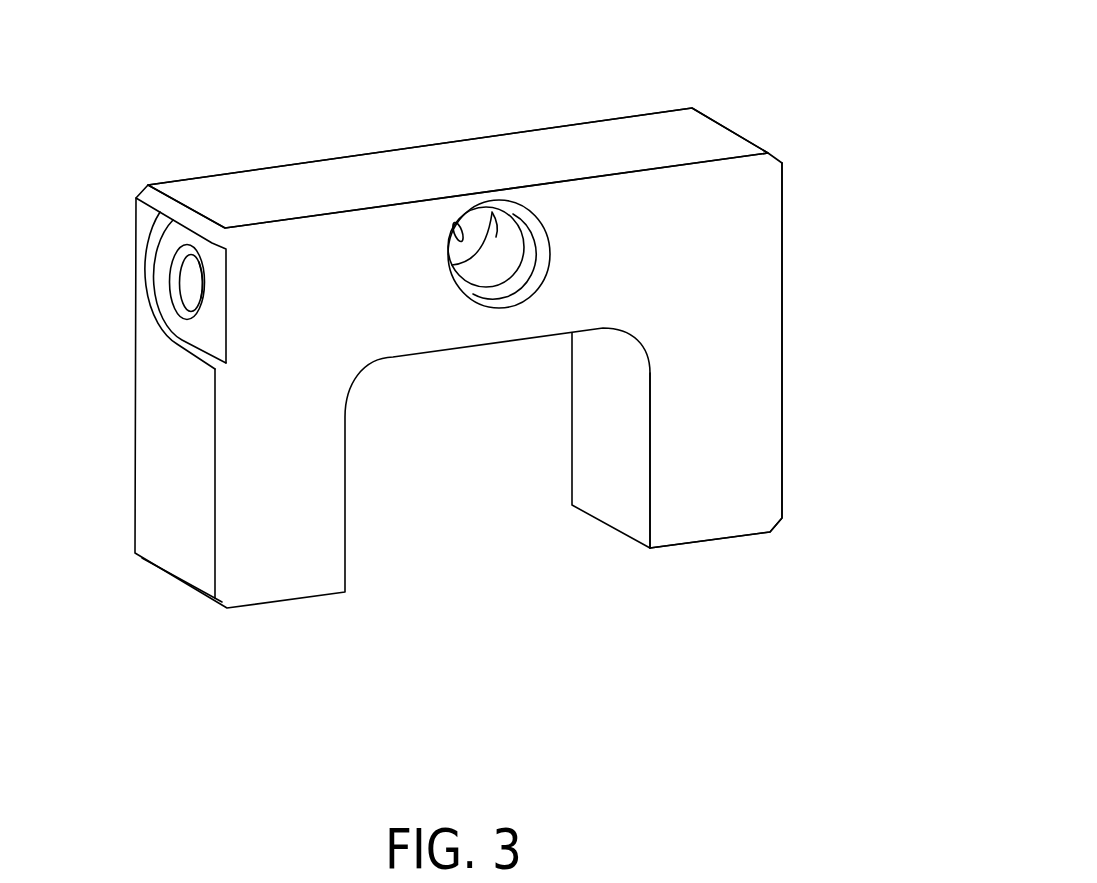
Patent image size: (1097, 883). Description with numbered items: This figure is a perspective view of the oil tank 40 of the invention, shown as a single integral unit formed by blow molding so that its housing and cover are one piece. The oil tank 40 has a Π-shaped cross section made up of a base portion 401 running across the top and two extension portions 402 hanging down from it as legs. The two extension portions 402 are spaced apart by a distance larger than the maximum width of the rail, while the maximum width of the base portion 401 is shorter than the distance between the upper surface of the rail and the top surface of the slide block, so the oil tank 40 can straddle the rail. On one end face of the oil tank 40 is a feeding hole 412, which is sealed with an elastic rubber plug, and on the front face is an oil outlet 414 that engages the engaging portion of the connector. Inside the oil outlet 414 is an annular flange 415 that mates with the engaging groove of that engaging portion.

The oil tank 40 is at (798, 115).
The base portion 401 is at (410, 175).
The extension portion 402 is at (700, 495).
The feeding hole 412 is at (190, 285).
The oil outlet 414 is at (497, 283).
The annular flange 415 is at (495, 237).